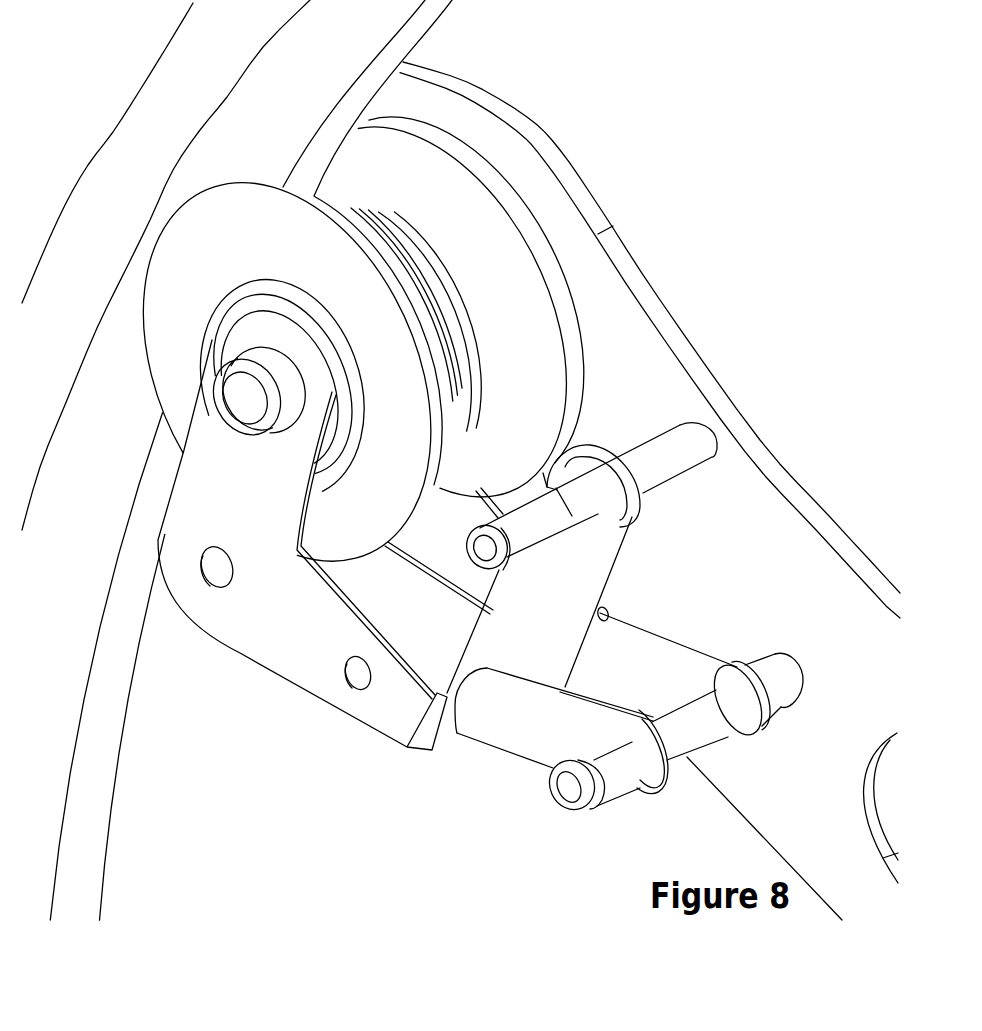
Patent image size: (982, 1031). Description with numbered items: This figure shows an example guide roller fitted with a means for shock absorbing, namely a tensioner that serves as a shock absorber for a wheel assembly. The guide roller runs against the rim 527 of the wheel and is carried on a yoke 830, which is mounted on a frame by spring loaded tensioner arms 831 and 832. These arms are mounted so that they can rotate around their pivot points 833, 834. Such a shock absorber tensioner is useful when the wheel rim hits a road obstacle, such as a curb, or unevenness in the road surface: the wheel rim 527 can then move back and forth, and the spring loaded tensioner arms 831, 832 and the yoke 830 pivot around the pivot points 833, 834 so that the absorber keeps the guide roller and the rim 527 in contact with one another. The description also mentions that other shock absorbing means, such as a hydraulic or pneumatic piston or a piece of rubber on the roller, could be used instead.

The rim 527 is at (333, 47).
The yoke 830 is at (265, 612).
The spring loaded tensioner arm 831 is at (530, 712).
The spring loaded tensioner arm 832 is at (575, 573).
The pivot point 833 is at (613, 760).
The pivot point 834 is at (677, 450).